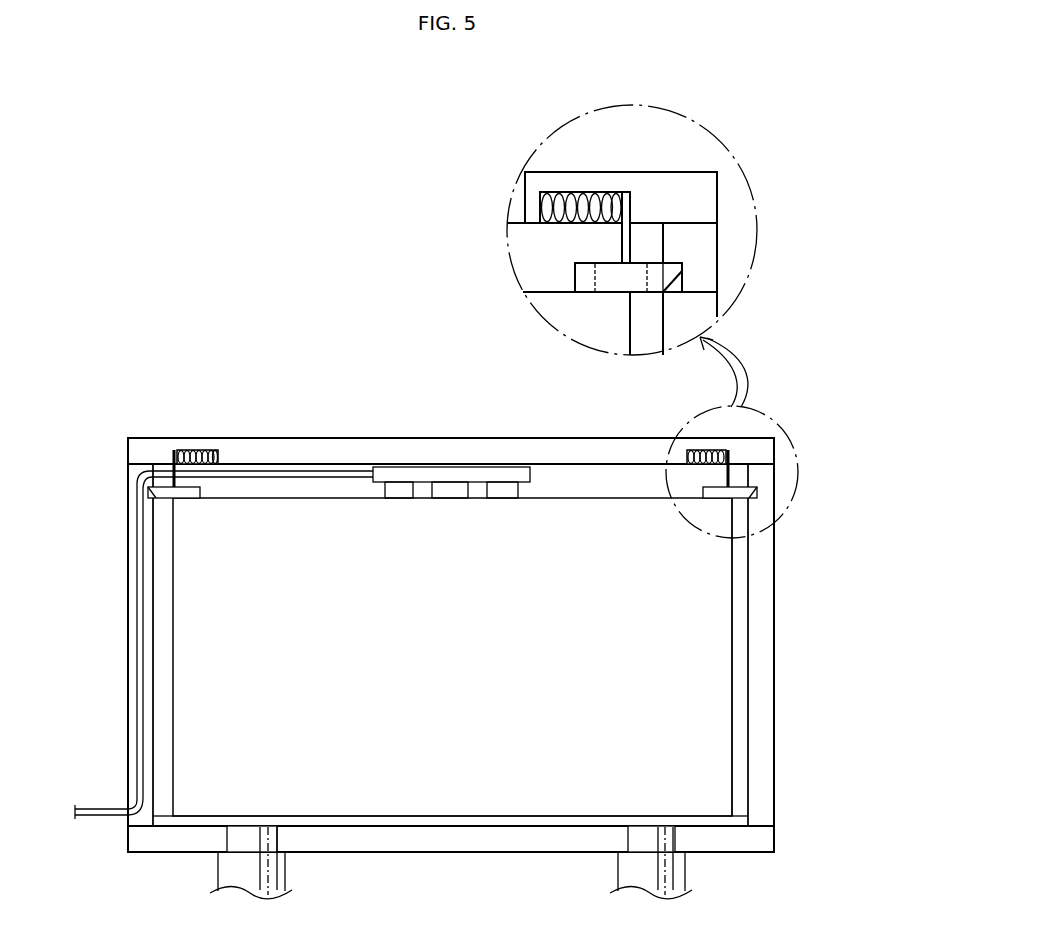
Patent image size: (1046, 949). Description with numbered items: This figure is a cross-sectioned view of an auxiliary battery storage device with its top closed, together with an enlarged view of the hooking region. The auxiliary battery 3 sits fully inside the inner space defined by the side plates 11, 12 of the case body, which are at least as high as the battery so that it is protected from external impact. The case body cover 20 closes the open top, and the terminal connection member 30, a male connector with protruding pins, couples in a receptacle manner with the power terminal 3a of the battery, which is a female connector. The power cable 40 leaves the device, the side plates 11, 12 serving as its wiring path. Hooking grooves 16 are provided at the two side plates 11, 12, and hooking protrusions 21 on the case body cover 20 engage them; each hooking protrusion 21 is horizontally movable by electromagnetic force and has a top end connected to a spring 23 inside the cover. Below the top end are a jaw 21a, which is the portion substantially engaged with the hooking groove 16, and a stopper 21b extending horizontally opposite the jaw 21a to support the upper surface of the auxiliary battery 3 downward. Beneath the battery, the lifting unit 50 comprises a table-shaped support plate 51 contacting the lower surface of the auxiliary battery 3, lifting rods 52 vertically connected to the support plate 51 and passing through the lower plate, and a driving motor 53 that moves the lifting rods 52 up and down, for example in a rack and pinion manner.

The auxiliary battery 3 is at (710, 650).
The power terminal 3a is at (458, 493).
The side plate 11 is at (128, 597).
The side plate 12 is at (774, 600).
The hooking groove 16 is at (683, 284).
The case body cover 20 is at (348, 447).
The hooking protrusion 21 is at (152, 489).
The jaw 21a is at (681, 271).
The stopper 21b is at (586, 278).
The spring 23 is at (540, 207).
The terminal connection member 30 is at (442, 474).
The power cable 40 is at (140, 690).
The lifting unit 50 is at (206, 863).
The support plate 51 is at (745, 823).
The lifting rod 52 is at (667, 842).
The driving motor 53 is at (672, 878).